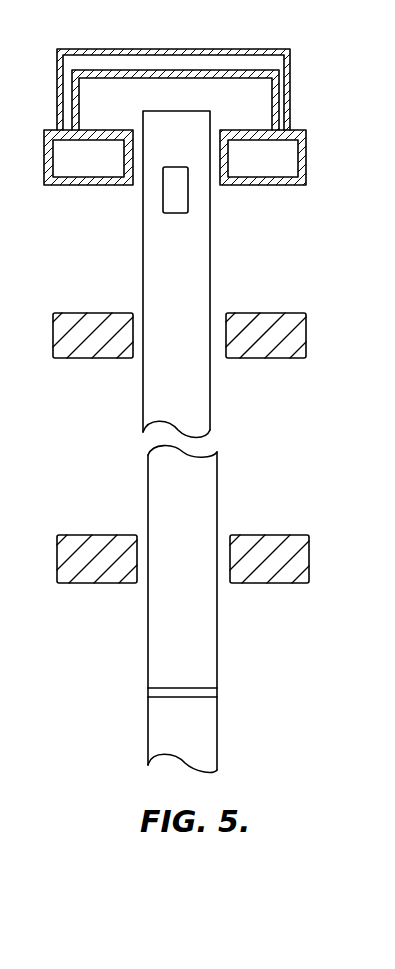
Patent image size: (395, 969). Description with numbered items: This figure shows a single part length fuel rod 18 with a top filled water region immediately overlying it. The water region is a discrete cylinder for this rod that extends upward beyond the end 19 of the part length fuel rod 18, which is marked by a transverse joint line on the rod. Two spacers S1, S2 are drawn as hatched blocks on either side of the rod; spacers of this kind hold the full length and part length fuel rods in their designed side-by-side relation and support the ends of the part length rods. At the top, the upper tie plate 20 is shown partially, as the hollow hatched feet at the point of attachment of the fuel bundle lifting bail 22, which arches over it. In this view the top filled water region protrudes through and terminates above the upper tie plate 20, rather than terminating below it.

The fuel bundle lifting bail 22 is at (240, 48).
The upper tie plate 20 is at (307, 162).
The first stop/section S1 is at (307, 333).
The second stop/section S2 is at (310, 551).
The end of part length fuel rod 19 is at (170, 692).
The part length fuel rod 18 is at (150, 735).